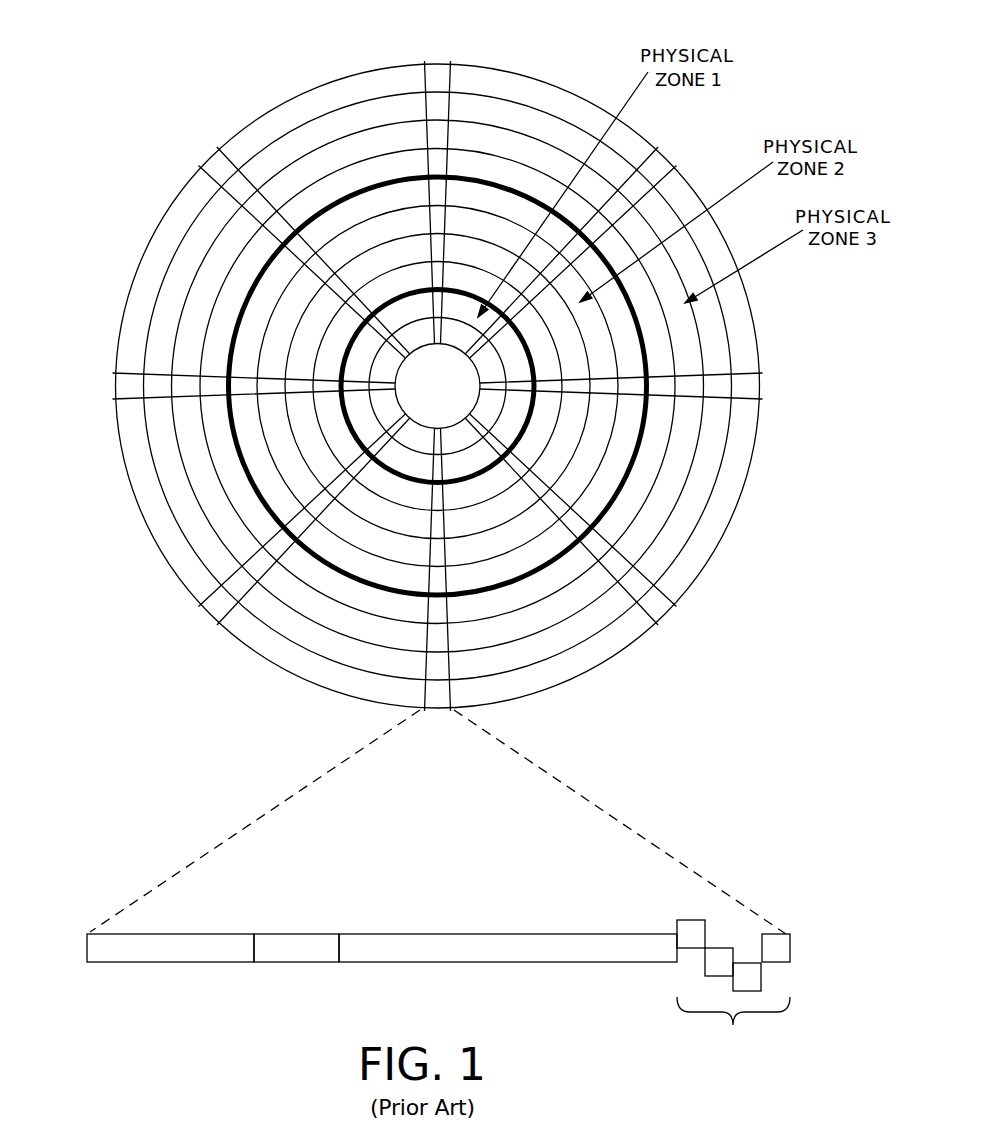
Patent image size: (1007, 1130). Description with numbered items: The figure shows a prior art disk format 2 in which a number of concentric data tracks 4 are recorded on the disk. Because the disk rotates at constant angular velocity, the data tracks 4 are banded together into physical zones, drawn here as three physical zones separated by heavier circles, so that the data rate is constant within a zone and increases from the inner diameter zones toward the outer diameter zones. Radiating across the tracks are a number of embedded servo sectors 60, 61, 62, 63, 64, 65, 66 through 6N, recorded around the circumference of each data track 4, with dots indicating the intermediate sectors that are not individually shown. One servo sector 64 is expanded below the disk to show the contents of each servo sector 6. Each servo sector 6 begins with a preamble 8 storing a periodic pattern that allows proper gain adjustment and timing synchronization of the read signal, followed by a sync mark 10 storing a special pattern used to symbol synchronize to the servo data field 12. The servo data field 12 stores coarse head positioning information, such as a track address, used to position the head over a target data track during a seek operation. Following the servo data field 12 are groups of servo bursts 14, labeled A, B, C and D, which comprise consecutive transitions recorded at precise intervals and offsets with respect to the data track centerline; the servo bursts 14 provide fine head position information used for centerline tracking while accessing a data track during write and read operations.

The disk format 2 is at (202, 68).
The data tracks 4 is at (570, 112).
The servo sector 6 is at (439, 396).
The servo sector 60 is at (439, 72).
The servo sector 61 is at (658, 165).
The servo sector 62 is at (752, 387).
The servo sector 63 is at (665, 618).
The servo sector 64 is at (294, 781).
The servo sector 65 is at (215, 610).
The servo sector 66 is at (122, 385).
The servo sector 6N is at (217, 165).
The preamble 8 is at (152, 957).
The sync mark 10 is at (293, 957).
The servo data field 12 is at (495, 957).
The servo bursts 14 is at (665, 902).